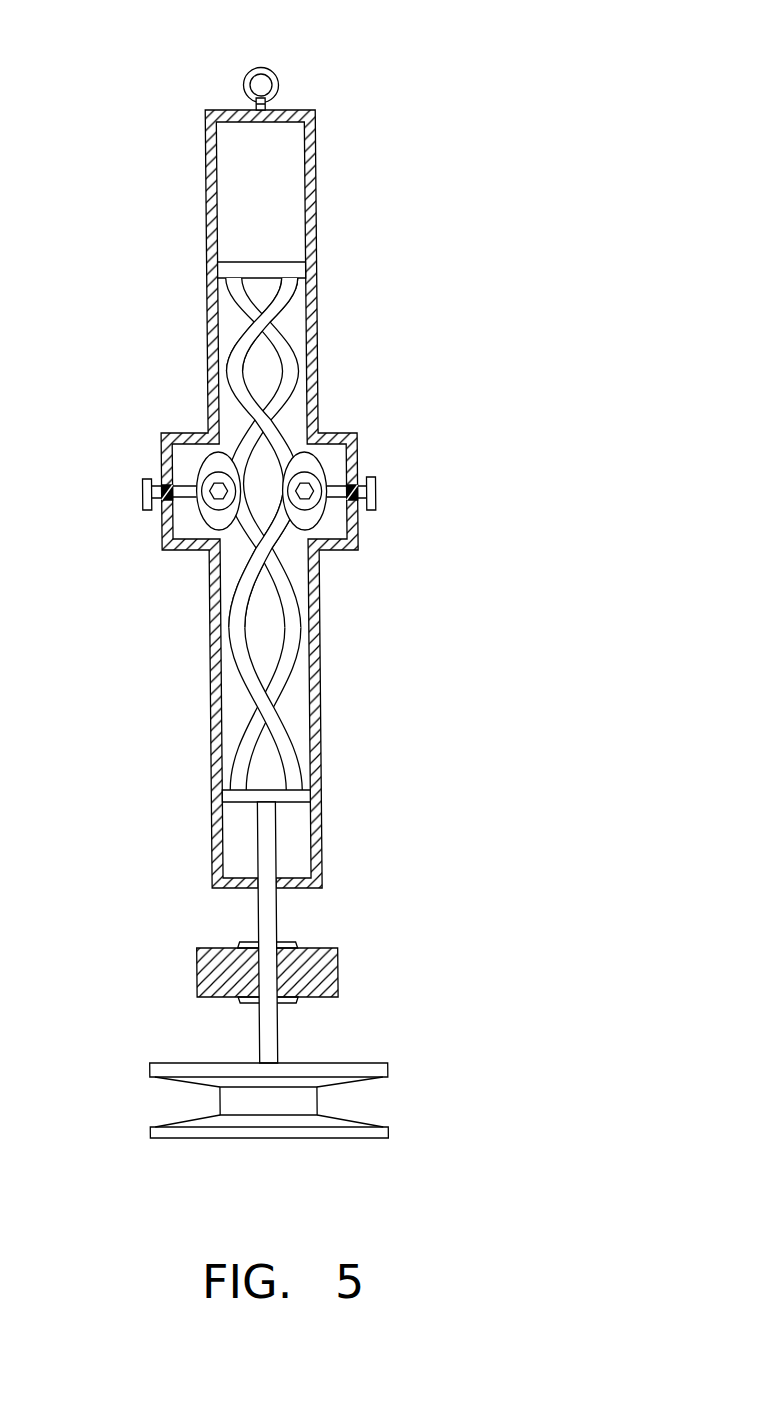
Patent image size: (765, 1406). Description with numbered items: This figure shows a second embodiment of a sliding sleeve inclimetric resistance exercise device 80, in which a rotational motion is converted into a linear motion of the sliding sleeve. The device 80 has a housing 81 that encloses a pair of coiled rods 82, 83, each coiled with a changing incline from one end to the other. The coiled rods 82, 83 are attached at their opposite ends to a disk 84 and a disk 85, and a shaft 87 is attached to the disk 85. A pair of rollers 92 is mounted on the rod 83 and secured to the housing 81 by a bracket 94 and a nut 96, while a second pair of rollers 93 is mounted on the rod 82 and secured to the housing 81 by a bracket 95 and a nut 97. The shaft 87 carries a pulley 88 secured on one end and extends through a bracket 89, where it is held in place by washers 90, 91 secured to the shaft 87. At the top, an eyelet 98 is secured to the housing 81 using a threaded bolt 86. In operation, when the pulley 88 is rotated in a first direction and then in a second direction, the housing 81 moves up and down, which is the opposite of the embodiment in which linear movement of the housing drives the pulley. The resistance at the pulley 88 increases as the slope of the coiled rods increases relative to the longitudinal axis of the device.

The sliding sleeve inclimetric resistance exercise device 80 is at (127, 807).
The housing 81 is at (318, 328).
The coiled rod 82 is at (293, 637).
The coiled rod 83 is at (233, 632).
The disk 84 is at (290, 272).
The disk 85 is at (290, 795).
The threaded bolt 86 is at (266, 104).
The shaft 87 is at (268, 902).
The pulley 88 is at (295, 1132).
The bracket 89 is at (340, 970).
The washer 90 is at (252, 943).
The washer 91 is at (290, 1003).
The pair of rollers 92 is at (303, 468).
The pair of rollers 93 is at (215, 468).
The bracket 94 is at (338, 495).
The bracket 95 is at (183, 497).
The nut 96 is at (377, 493).
The nut 97 is at (139, 492).
The eyelet 98 is at (263, 70).